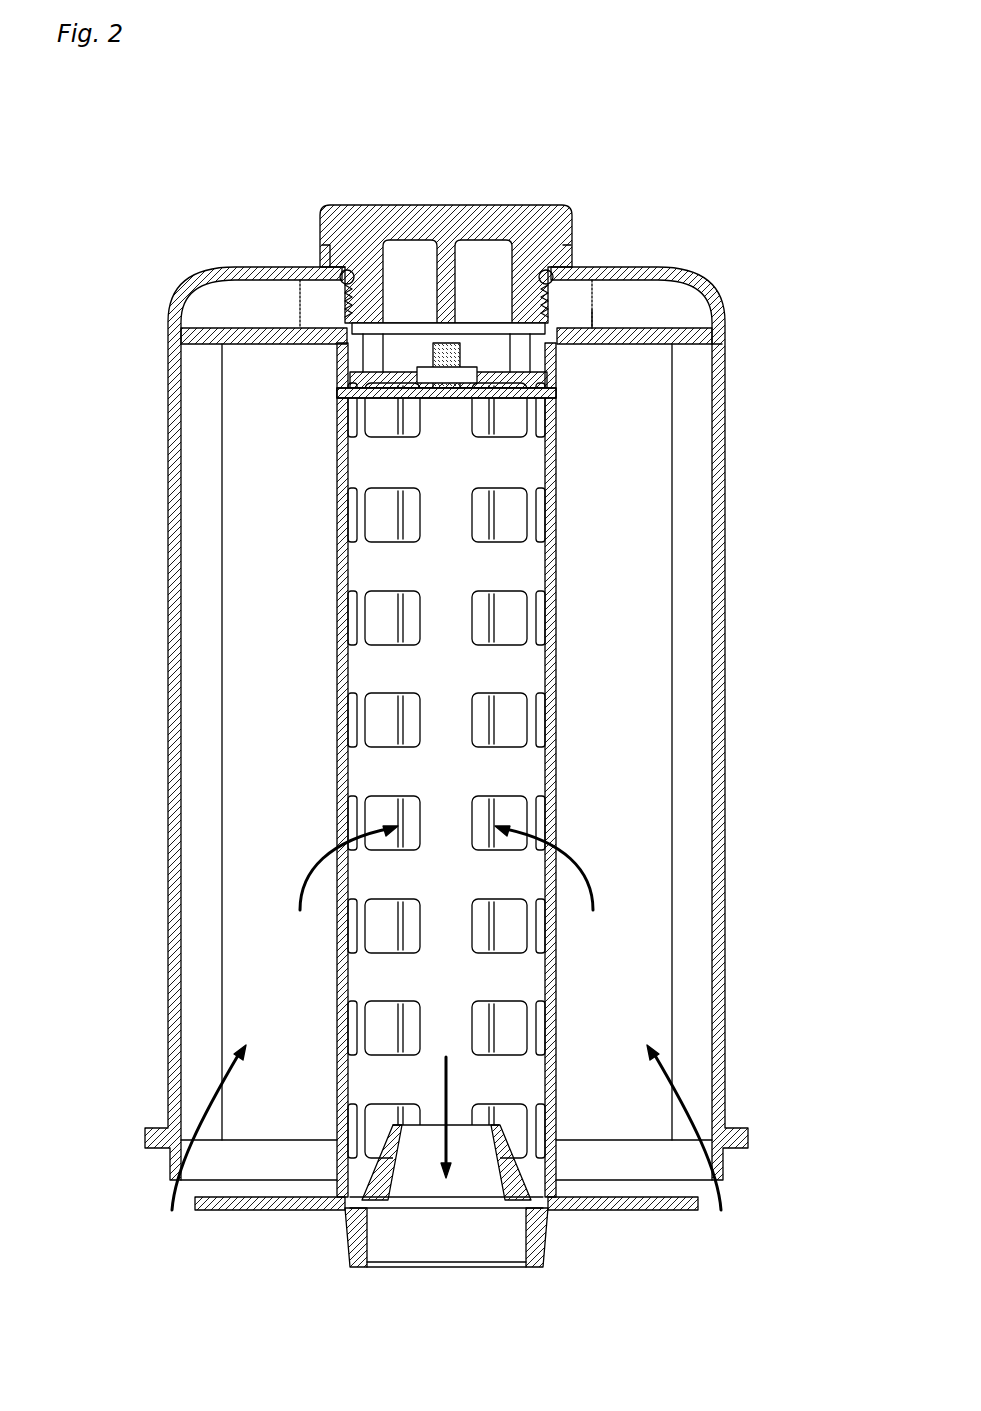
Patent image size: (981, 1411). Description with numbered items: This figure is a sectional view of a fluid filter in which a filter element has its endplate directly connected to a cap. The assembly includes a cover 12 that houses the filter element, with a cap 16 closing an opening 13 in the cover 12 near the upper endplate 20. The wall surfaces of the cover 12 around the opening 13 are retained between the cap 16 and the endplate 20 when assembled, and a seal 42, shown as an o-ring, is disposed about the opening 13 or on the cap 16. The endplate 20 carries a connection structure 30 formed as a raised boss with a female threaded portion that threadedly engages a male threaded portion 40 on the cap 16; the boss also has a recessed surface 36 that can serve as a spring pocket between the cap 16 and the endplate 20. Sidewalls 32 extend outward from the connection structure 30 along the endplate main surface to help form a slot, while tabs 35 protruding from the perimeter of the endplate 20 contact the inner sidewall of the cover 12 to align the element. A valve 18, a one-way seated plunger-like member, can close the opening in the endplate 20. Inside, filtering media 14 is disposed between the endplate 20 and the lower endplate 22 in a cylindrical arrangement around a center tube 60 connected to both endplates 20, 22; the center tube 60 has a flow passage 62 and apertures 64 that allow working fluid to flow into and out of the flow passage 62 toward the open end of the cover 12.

The cover 12 is at (722, 540).
The opening 13 is at (360, 240).
The filtering media 14 is at (673, 455).
The cap 16 is at (550, 205).
The valve 18 is at (433, 352).
The endplate 20 is at (667, 327).
The endplate 22 is at (207, 1213).
The connection structure 30 is at (518, 283).
The sidewalls 32 is at (592, 310).
The tabs 35 is at (722, 350).
The recessed surface 36 is at (378, 347).
The threaded portion 40 is at (355, 305).
The seal 42 is at (345, 262).
The center tube 60 is at (335, 672).
The flow passage 62 is at (432, 762).
The apertures 64 is at (385, 612).